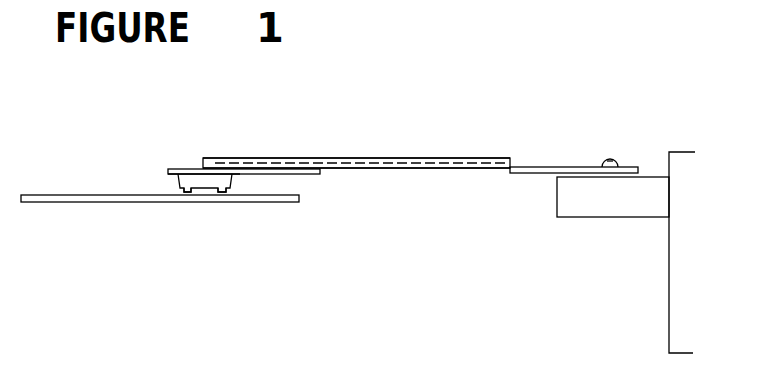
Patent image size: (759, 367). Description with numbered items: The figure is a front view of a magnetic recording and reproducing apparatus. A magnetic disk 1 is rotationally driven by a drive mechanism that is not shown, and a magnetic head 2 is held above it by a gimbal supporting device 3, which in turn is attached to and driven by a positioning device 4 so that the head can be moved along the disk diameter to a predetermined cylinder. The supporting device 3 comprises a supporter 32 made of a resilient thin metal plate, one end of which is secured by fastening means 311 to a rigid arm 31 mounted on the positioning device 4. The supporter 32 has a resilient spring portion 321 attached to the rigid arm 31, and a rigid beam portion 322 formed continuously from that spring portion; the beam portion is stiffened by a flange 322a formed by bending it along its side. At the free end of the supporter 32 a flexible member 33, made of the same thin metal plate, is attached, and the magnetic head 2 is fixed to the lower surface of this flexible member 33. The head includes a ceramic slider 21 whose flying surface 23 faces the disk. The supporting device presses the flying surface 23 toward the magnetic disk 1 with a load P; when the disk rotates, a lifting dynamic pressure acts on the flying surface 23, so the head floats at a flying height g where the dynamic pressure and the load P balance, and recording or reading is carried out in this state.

The magnetic disk 1 is at (78, 195).
The magnetic head 2 is at (192, 181).
The slider 21 is at (223, 183).
The flying surface 23 is at (187, 193).
The gimbal supporting device 3 is at (352, 119).
The rigid arm 31 is at (582, 200).
The fastening means 311 is at (600, 162).
The supporter 32 is at (296, 150).
The resilient spring portion 321 is at (523, 173).
The rigid beam portion 322 is at (383, 172).
The flange 322a is at (412, 157).
The flexible member 33 is at (310, 175).
The positioning device 4 is at (683, 297).
The load P is at (205, 136).
The flying height g is at (253, 178).